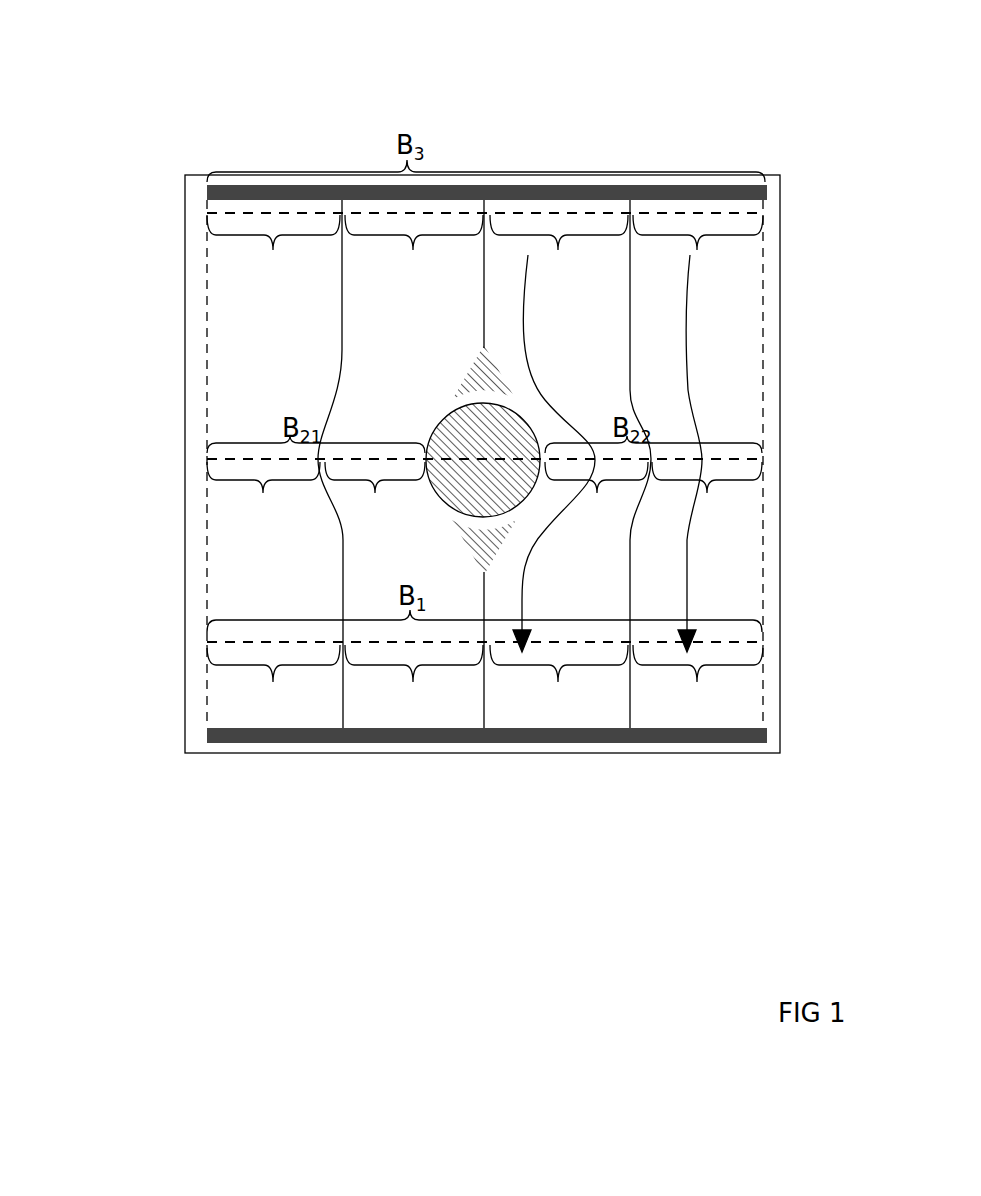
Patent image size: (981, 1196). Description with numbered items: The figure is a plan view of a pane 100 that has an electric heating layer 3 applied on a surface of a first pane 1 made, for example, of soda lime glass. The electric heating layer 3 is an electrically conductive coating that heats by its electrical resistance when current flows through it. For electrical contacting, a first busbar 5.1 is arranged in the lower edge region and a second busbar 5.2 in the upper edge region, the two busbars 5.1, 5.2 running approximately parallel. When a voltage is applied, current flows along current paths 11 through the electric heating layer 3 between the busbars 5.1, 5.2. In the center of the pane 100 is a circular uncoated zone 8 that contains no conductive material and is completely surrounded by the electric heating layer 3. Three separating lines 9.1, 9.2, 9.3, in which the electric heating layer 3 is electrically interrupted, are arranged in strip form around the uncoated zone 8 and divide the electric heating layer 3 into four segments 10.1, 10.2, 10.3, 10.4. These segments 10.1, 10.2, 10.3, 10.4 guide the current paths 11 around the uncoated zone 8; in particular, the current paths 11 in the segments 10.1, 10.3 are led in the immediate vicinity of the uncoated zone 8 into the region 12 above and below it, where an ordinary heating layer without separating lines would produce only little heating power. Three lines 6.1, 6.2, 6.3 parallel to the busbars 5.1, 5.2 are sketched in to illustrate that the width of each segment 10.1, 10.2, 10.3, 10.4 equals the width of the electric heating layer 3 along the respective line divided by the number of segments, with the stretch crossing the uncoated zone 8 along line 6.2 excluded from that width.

The pane 100 is at (173, 100).
The first pane 1 is at (185, 518).
The electric heating layer 3 is at (210, 592).
The first busbar 5.1 is at (207, 730).
The second busbar 5.2 is at (207, 190).
The line 6.1 is at (732, 640).
The line 6.2 is at (737, 457).
The line 6.3 is at (735, 213).
The uncoated zone 8 is at (455, 455).
The separating line 9.1 is at (484, 705).
The separating line 9.2 is at (340, 705).
The separating line 9.3 is at (628, 707).
The segment 10.1 is at (388, 710).
The segment 10.2 is at (247, 710).
The segment 10.3 is at (532, 707).
The segment 10.4 is at (740, 708).
The current paths 11 is at (528, 342).
The region 12 is at (505, 380).